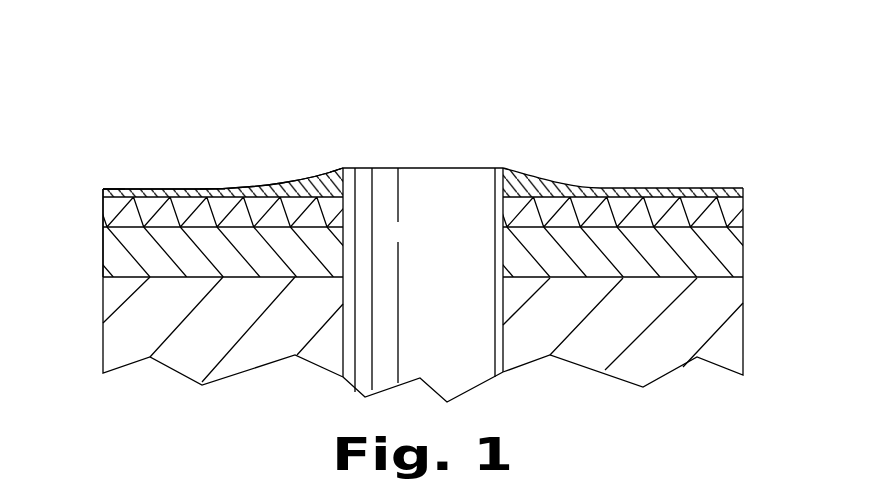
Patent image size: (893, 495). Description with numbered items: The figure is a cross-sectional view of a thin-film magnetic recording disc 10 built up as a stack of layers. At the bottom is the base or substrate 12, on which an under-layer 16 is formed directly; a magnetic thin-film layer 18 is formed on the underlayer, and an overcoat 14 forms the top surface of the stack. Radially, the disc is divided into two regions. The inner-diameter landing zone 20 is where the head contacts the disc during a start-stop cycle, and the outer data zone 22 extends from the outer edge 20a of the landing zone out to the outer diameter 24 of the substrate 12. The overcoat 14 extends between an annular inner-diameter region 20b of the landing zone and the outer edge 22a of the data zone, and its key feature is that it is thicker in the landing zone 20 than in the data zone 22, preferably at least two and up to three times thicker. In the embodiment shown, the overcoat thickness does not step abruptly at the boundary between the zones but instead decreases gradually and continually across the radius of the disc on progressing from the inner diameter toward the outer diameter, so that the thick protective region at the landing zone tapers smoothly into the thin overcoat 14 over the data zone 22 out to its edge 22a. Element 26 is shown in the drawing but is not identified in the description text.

The magnetic recording disc 10 is at (141, 78).
The substrate 12 is at (720, 317).
The overcoat 14 is at (741, 189).
The under-layer 16 is at (730, 258).
The magnetic thin-film layer 18 is at (738, 210).
The inner-diameter landing zone 20 is at (310, 120).
The outer edge of the landing zone 20a is at (296, 184).
The annular inner-diameter region of the landing zone 20b is at (343, 176).
The data zone 22 is at (228, 178).
The outer edge of the data zone 22a is at (103, 190).
The outer diameter 24 is at (103, 190).
The cylindrical member 26 is at (344, 176).